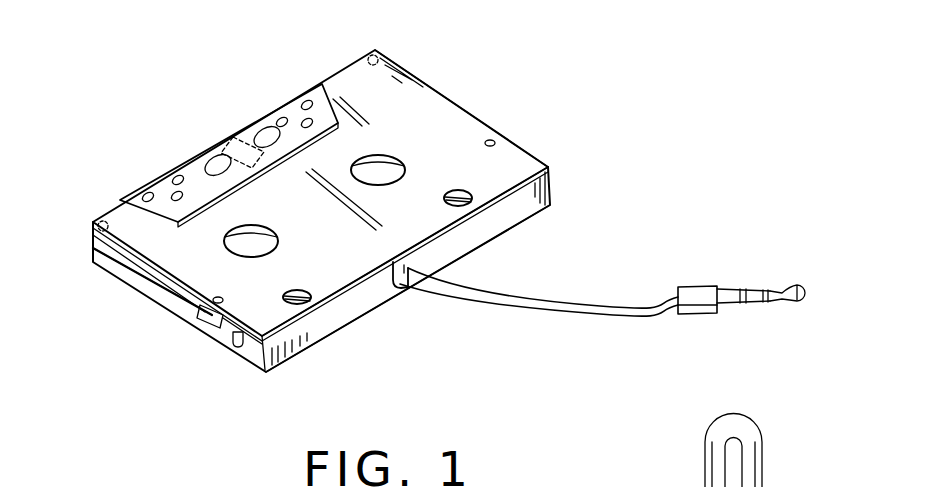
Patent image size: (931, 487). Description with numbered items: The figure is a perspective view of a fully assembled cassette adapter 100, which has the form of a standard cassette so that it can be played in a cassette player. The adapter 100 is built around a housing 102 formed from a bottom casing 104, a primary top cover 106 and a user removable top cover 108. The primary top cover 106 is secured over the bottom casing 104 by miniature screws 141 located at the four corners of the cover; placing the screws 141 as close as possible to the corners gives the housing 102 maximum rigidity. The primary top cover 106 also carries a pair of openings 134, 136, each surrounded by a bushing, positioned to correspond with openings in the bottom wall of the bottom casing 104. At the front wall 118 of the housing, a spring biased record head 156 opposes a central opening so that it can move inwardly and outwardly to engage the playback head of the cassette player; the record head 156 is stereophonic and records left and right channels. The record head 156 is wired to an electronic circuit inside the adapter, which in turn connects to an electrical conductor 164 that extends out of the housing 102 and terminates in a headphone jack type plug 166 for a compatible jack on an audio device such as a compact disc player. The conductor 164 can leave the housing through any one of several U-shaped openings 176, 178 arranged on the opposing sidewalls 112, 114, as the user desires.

The cassette adapter 100 is at (505, 58).
The housing 102 is at (406, 61).
The bottom casing 104 is at (317, 338).
The primary top cover 106 is at (177, 243).
The user removable top cover 108 is at (520, 160).
The sidewall 112 is at (190, 317).
The sidewall 114 is at (470, 110).
The front wall 118 is at (360, 298).
The opening 134 is at (250, 240).
The opening 136 is at (372, 172).
The screws 141 is at (372, 55).
The record head 156 is at (229, 137).
The electrical conductor 164 is at (530, 297).
The plug 166 is at (690, 292).
The U-shaped opening 176 is at (233, 346).
The U-shaped opening 178 is at (410, 266).